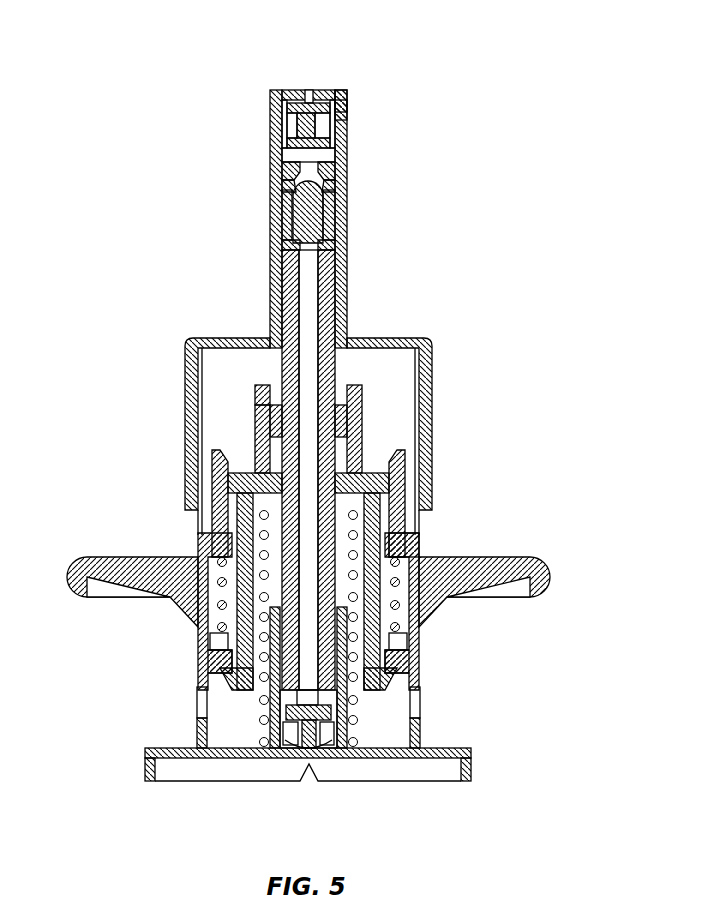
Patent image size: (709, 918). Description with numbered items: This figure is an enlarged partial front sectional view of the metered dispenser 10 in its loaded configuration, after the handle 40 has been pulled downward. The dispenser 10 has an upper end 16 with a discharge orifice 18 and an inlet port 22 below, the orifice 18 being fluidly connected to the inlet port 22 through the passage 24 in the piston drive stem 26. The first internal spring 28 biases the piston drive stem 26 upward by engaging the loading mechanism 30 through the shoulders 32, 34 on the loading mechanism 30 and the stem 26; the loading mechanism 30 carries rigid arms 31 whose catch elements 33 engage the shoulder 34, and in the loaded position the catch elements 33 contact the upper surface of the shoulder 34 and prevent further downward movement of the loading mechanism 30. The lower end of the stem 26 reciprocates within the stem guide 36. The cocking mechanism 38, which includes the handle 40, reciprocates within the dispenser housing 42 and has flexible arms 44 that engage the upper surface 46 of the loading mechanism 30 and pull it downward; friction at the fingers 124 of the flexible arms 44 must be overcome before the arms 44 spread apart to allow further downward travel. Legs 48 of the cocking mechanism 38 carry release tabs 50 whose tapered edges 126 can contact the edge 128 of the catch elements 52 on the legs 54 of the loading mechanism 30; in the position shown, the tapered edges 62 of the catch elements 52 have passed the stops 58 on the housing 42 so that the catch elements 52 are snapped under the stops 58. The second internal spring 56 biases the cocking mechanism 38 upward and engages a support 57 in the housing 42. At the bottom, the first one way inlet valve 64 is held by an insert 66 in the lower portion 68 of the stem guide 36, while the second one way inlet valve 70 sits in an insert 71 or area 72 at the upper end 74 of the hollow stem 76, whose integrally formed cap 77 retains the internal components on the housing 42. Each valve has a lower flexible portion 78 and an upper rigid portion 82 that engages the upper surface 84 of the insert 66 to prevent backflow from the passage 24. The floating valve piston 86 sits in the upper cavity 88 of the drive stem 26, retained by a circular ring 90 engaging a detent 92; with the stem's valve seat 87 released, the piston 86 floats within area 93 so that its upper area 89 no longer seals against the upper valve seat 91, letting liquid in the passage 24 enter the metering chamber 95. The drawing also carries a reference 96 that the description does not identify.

The metered dispenser 10 is at (185, 178).
The upper end 16 is at (340, 92).
The discharge orifice 18 is at (310, 92).
The inlet port 22 is at (301, 755).
The passage 24 is at (310, 302).
The piston drive stem 26 is at (328, 277).
The first internal spring 28 is at (278, 722).
The loading mechanism 30 is at (397, 450).
The rigid arms 31 is at (255, 422).
The shoulder 32 is at (214, 462).
The catch elements 33 is at (255, 400).
The shoulder 34 is at (350, 410).
The stem guide 36 is at (330, 712).
The cocking mechanism 38 is at (416, 640).
The handle 40 is at (557, 573).
The dispenser housing 42 is at (340, 735).
The flexible arms 44 is at (395, 520).
The upper surface 46 is at (400, 465).
The legs 48 is at (198, 635).
The release tabs 50 is at (198, 660).
The catch elements 52 is at (380, 688).
The legs 54 is at (372, 500).
The second internal spring 56 is at (200, 557).
The support 57 is at (200, 640).
The stops 58 is at (395, 665).
The tapered edge 62 is at (270, 703).
The first one way inlet valve 64 is at (320, 755).
The insert 66 is at (293, 755).
The lower portion 68 is at (287, 755).
The second one way inlet valve 70 is at (297, 131).
The insert 71 is at (327, 120).
The area 72 is at (283, 103).
The upper end 74 is at (278, 90).
The hollow stem 76 is at (348, 222).
The cap 77 is at (373, 336).
The lower flexible portion 78 is at (340, 140).
The upper rigid portion 82 is at (343, 105).
The upper surface 84 is at (150, 752).
The floating valve piston 86 is at (290, 213).
The valve seat 87 is at (283, 242).
The upper cavity 88 is at (340, 202).
The upper area 89 is at (287, 176).
The circular ring 90 is at (290, 192).
The upper valve seat 91 is at (338, 155).
The detent 92 is at (338, 178).
The area 93 is at (325, 240).
The metering chamber 95 is at (297, 153).
The wall 96 is at (420, 748).
The fingers 124 is at (212, 470).
The tapered edges 126 is at (228, 682).
The edge 128 is at (416, 660).